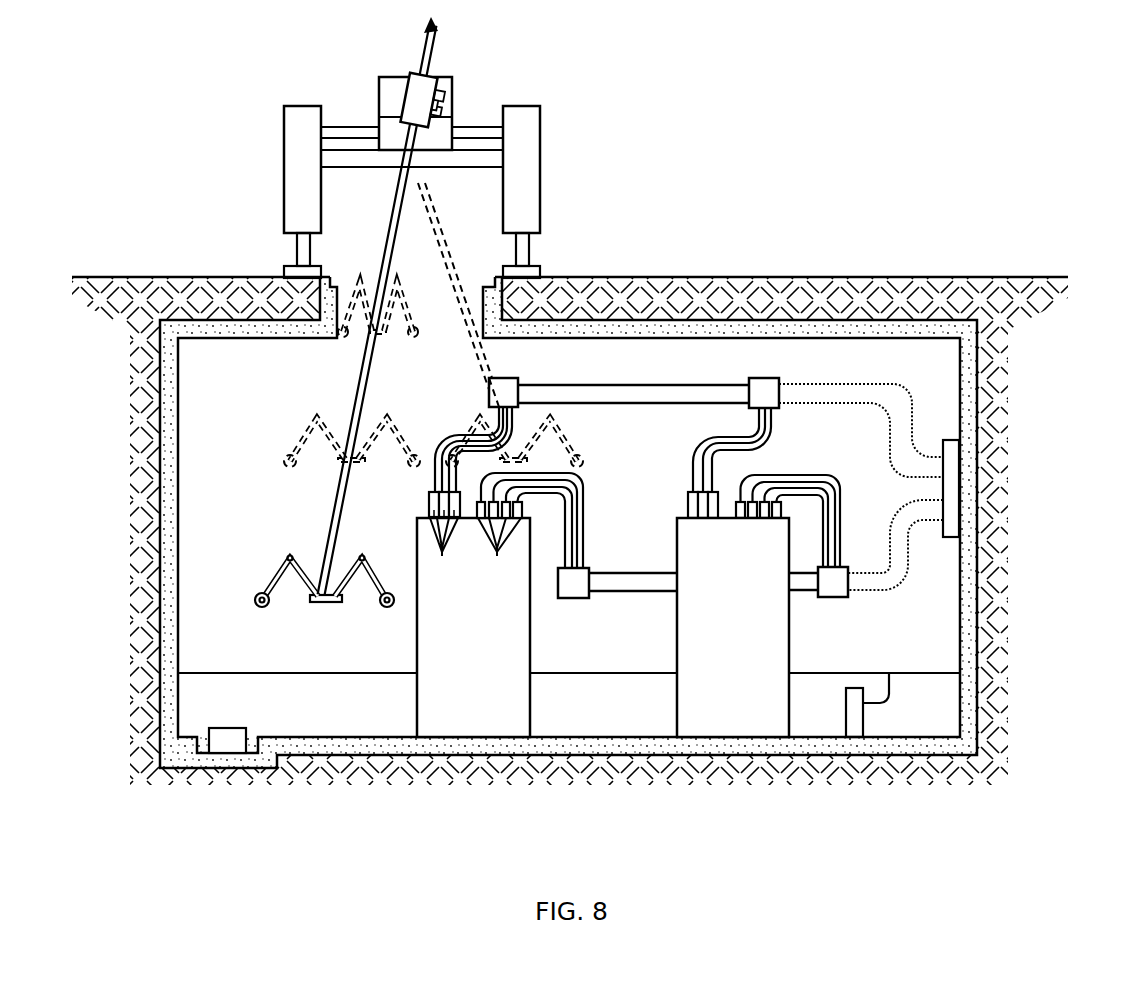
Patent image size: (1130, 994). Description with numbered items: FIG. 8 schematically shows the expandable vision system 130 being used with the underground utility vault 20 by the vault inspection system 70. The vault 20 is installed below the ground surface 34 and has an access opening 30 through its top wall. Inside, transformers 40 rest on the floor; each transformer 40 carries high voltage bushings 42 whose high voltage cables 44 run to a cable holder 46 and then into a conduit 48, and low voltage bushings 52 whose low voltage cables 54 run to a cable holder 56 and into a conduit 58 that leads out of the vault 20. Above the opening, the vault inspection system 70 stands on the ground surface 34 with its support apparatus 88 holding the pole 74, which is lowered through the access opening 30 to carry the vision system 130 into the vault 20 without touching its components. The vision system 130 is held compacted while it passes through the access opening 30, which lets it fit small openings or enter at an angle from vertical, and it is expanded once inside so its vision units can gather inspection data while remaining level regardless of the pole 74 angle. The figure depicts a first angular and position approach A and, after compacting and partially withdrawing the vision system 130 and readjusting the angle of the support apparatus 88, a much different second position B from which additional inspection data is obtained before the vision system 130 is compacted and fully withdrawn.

The underground utility vault 20 is at (1041, 402).
The access opening 30 is at (477, 273).
The ground surface 34 is at (808, 276).
The transformer 40 is at (474, 712).
The high voltage bushing 42 is at (446, 555).
The high voltage cable 44 is at (445, 475).
The cable holder 46 is at (503, 378).
The conduit 48 is at (600, 384).
The low voltage bushing 52 is at (499, 547).
The low voltage cable 54 is at (575, 528).
The cable holder 56 is at (573, 598).
The conduit 58 is at (625, 594).
The vault inspection system 70 is at (606, 78).
The pole 74 is at (355, 393).
The support apparatus 88 is at (468, 86).
The expandable vision system 130 is at (343, 284).
The first angular and position approach A is at (297, 505).
The second position B is at (475, 380).